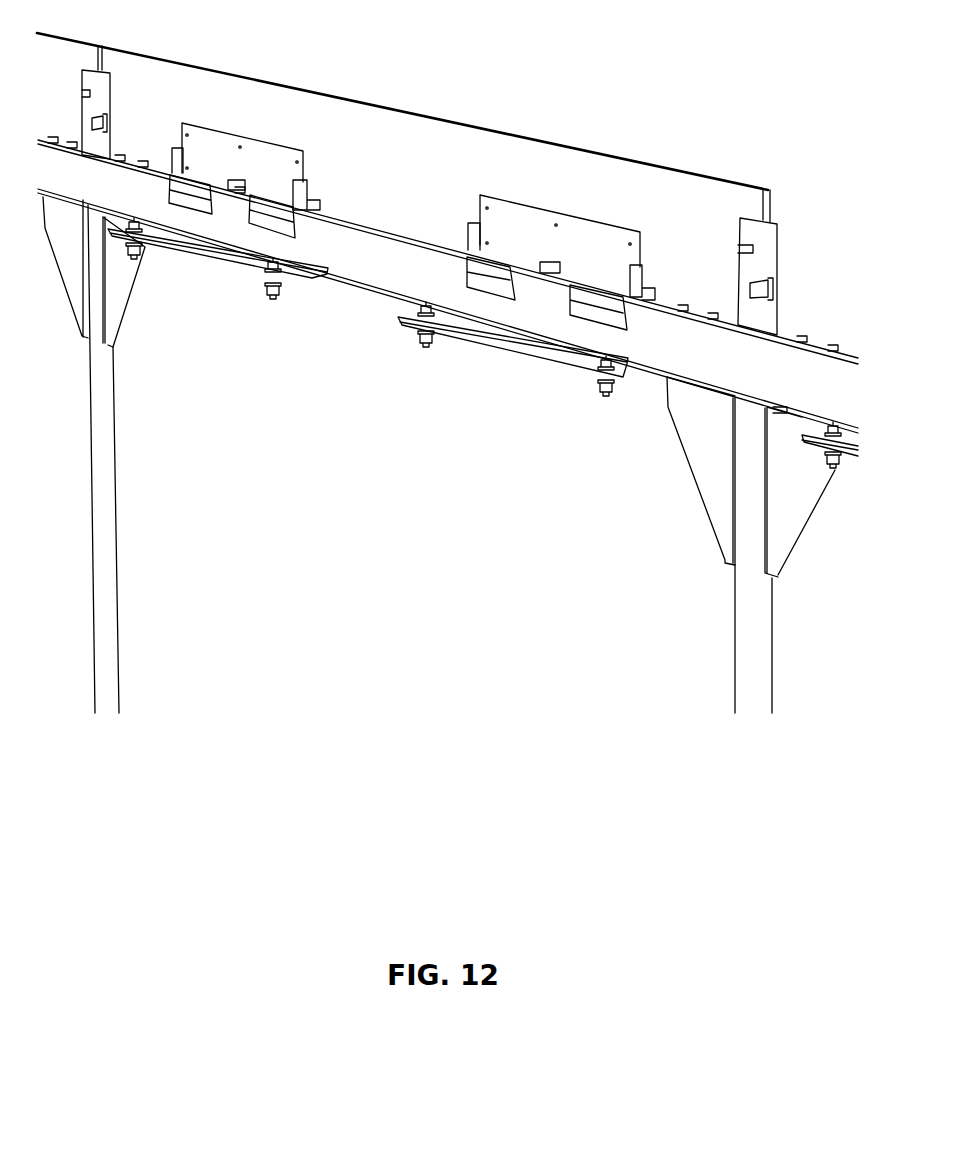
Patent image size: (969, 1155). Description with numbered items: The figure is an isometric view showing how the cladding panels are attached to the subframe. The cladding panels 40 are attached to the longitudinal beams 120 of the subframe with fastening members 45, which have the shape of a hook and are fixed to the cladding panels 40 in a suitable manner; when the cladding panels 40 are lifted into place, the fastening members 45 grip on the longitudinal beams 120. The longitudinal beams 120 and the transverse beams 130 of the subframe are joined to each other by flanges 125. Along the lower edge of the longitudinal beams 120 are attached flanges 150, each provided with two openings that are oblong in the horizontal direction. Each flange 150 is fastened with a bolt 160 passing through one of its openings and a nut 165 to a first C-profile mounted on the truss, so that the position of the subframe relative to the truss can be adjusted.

The cladding panel 40 is at (425, 143).
The fastening member 45 is at (230, 150).
The longitudinal beam 120 is at (375, 263).
The flange 125 is at (703, 463).
The transverse beam 130 is at (102, 474).
The flange 150 is at (523, 345).
The bolt 160 is at (427, 305).
The nut 165 is at (418, 333).